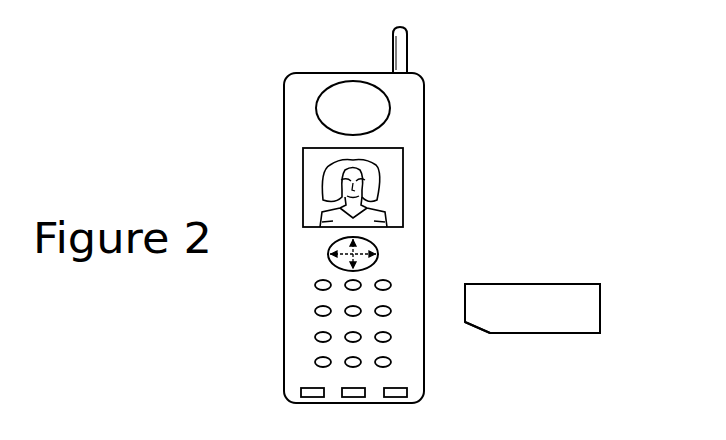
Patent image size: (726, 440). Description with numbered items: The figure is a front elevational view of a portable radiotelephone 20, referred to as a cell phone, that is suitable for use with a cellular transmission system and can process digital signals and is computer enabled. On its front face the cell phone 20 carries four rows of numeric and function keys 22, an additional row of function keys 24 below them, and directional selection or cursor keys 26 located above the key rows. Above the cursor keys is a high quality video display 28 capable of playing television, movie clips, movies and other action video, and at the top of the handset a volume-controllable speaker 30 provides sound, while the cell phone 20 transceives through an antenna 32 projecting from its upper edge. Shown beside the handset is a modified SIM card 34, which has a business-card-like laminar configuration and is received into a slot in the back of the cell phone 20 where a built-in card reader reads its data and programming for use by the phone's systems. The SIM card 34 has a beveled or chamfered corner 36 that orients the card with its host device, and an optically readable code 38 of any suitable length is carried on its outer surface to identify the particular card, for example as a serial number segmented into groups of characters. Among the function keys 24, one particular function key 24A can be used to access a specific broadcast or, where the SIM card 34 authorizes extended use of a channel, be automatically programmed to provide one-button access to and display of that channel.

The portable radiotelephone 20 is at (468, 165).
The numeric and function keys 22 is at (281, 282).
The function keys 24 is at (289, 404).
The function key 24A is at (407, 391).
The directional selection or cursor keys 26 is at (328, 251).
The video display 28 is at (312, 172).
The speaker 30 is at (342, 88).
The antenna 32 is at (404, 48).
The SIM card 34 is at (593, 292).
The chamfered corner 36 is at (490, 334).
The optically readable code 38 is at (529, 303).